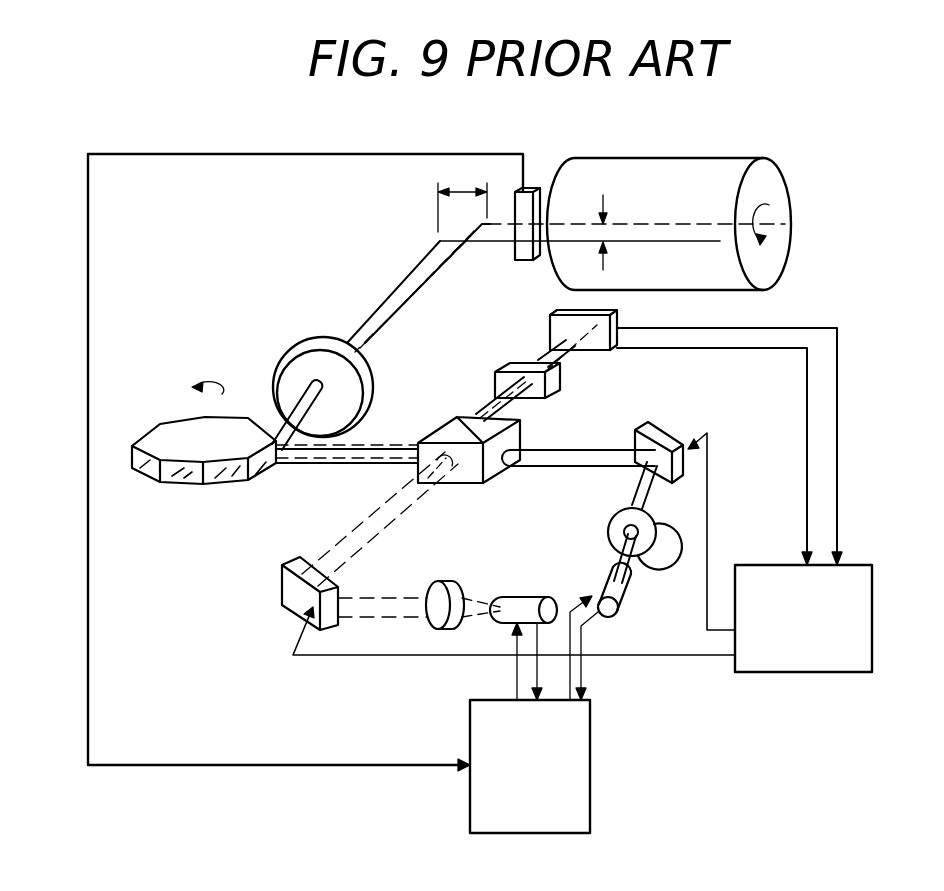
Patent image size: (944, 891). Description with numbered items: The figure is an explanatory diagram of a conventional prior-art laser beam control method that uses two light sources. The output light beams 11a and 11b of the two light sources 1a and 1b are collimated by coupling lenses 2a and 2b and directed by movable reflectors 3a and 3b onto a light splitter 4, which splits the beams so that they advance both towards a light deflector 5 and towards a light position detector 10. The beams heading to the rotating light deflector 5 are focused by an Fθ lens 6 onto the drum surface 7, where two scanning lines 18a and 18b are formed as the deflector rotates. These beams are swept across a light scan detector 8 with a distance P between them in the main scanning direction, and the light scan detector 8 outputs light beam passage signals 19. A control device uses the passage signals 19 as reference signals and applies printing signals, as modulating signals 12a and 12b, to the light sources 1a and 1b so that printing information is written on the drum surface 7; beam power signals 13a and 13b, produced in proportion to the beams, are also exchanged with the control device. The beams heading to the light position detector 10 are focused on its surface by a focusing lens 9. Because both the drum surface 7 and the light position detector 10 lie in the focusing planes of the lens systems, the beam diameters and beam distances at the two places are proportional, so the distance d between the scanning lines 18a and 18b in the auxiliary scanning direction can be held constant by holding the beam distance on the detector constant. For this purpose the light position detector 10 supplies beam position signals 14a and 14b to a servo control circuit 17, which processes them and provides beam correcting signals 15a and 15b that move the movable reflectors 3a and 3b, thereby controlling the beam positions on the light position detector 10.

The light beam passage signals 19 is at (198, 154).
The drum surface 7 is at (745, 158).
The scanning line 18a is at (657, 224).
The scanning line 18b is at (693, 241).
The distance between the scanning lines d is at (604, 240).
The light scan detector 8 is at (530, 190).
The distance between the light beams P is at (462, 190).
The Fθ lens 6 is at (310, 338).
The light deflector 5 is at (157, 426).
The light splitter 4 is at (480, 485).
The focusing lens 9 is at (497, 372).
The light position detector 10 is at (548, 325).
The beam position signal 14a is at (837, 378).
The beam position signal 14b is at (807, 436).
The movable reflector 3b is at (655, 427).
The coupling lens 2b is at (610, 515).
The output light beam 11b is at (654, 548).
The light source 1b is at (622, 598).
The modulating signal 12b is at (572, 627).
The beam power signal 13b is at (583, 672).
The light source 1a is at (527, 597).
The output light beam 11a is at (470, 603).
The coupling lens 2a is at (440, 580).
The movable reflector 3a is at (282, 590).
The beam correcting signal 15a is at (688, 657).
The beam correcting signal 15b is at (728, 660).
The modulating signal 12a is at (516, 668).
The beam power signal 13a is at (536, 678).
The servo control circuit 17 is at (855, 672).